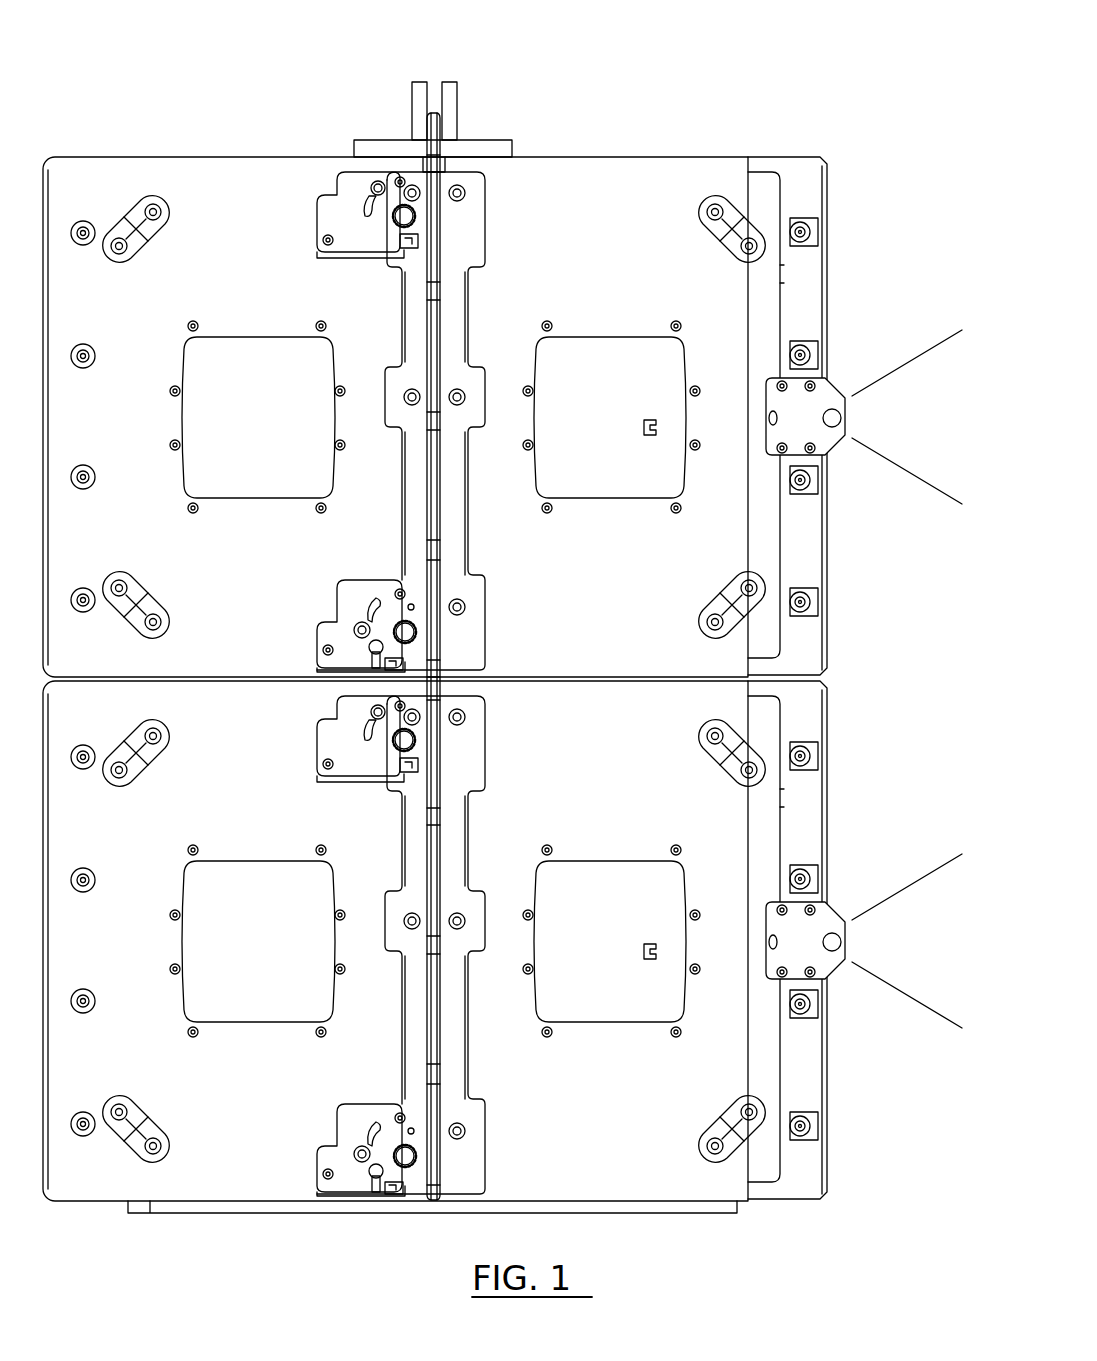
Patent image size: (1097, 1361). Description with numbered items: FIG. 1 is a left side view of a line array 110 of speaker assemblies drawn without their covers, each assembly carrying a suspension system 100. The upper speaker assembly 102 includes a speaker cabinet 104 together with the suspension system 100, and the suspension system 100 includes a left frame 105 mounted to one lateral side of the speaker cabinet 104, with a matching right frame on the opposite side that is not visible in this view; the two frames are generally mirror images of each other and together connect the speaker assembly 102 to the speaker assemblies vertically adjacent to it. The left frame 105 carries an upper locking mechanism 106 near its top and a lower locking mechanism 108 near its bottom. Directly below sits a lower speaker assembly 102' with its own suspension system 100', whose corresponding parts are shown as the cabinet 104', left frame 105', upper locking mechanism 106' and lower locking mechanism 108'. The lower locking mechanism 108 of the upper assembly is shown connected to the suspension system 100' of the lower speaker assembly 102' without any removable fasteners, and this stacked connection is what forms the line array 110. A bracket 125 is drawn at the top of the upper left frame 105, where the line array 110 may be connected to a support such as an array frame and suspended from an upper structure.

The line array 110 is at (870, 66).
The suspension system 100 is at (395, 390).
The suspension system of lower speaker assembly 100' is at (395, 967).
The speaker assembly 102 is at (835, 416).
The lower speaker assembly 102' is at (839, 940).
The speaker cabinet 104 is at (864, 454).
The second connector plate 104' is at (864, 941).
The left frame 105 is at (448, 387).
The second central rail frame 105' is at (401, 945).
The upper locking mechanism 106 is at (328, 181).
The second upper latch 106' is at (328, 751).
The lower locking mechanism 108 is at (327, 618).
The second lower latch 108' is at (327, 1145).
The top mounting bracket 125 is at (412, 101).